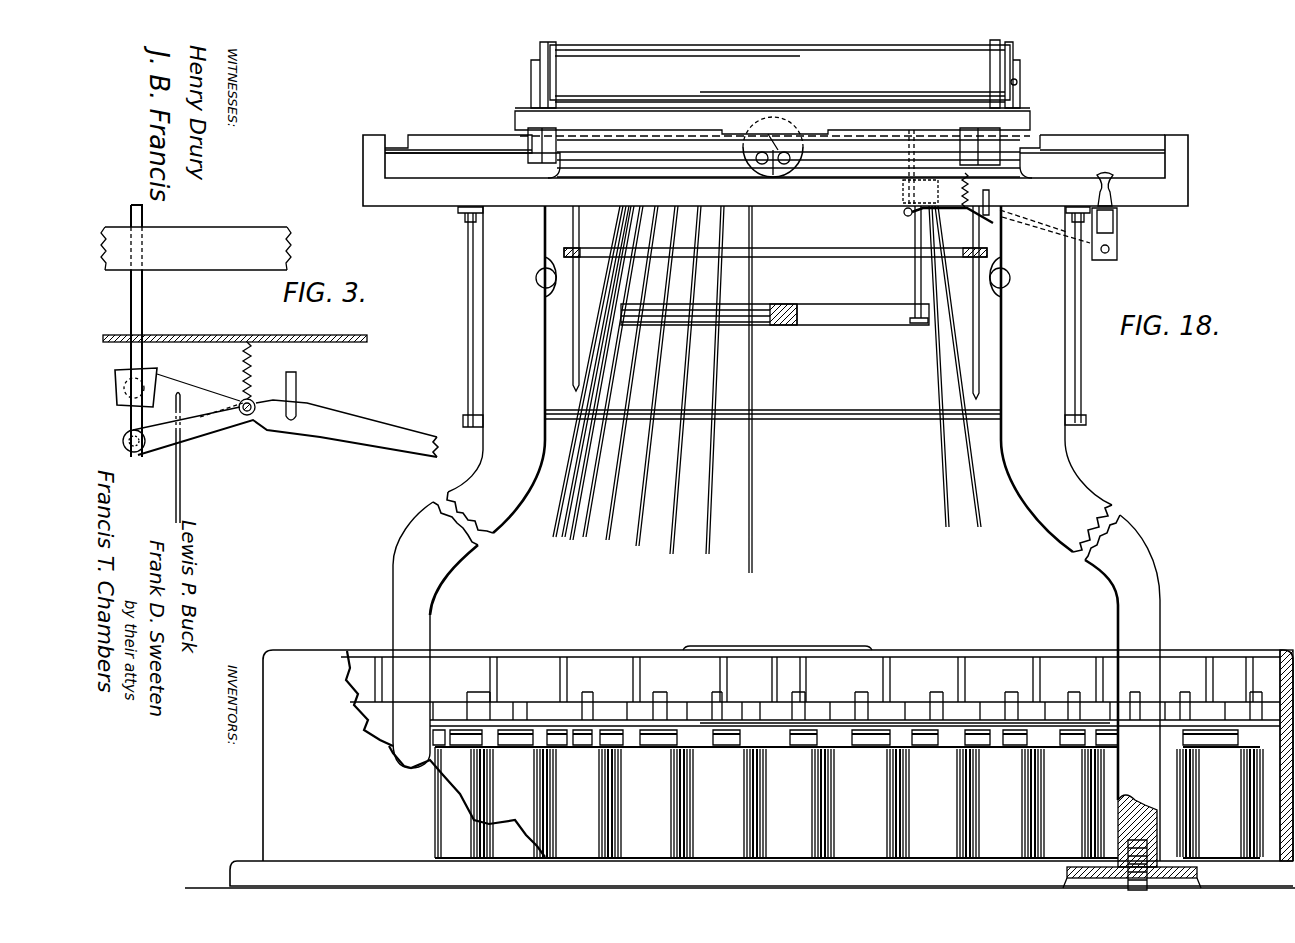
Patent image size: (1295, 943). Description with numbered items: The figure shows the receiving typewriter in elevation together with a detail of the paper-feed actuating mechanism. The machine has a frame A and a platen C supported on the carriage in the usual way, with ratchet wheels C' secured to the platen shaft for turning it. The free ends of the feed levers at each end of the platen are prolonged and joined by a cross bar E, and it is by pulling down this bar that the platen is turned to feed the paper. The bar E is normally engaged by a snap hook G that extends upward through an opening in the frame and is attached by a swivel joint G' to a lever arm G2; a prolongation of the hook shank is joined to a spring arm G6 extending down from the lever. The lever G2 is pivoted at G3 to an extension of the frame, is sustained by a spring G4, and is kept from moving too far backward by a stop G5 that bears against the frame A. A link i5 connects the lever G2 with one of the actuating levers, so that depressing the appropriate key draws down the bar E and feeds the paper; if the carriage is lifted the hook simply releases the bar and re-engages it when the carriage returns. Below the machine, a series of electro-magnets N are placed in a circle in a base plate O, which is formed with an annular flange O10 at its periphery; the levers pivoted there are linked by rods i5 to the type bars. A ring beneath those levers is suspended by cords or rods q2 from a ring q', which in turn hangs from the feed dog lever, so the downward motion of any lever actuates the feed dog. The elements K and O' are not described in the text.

In FIG. 3, the frame A is at (270, 331).
In FIG. 18, the frame A is at (655, 200).
In FIG. 18, the platen C is at (772, 111).
In FIG. 18, the ratchet wheels C' is at (780, 74).
In FIG. 3, the cross bar E is at (196, 248).
In FIG. 3, the snap hook G is at (155, 331).
In FIG. 18, the snap hook G is at (992, 168).
In FIG. 3, the swivel joint G' is at (158, 350).
In FIG. 18, the swivel joint G' is at (896, 206).
In FIG. 3, the lever arm G2 is at (280, 423).
In FIG. 18, the lever arm G2 is at (1117, 237).
In FIG. 18, the pivot G3 is at (1117, 255).
In FIG. 3, the spring G4 is at (250, 374).
In FIG. 18, the spring G4 is at (970, 182).
In FIG. 3, the stop G5 is at (296, 380).
In FIG. 18, the stop G5 is at (991, 202).
In FIG. 3, the spring arm G6 is at (196, 432).
In FIG. 18, the spring arm G6 is at (936, 214).
In FIG. 18, the key bar rack K is at (918, 281).
In FIG. 18, the electro-magnets N is at (597, 793).
In FIG. 18, the base plate O is at (740, 769).
In FIG. 18, the casing plate O' is at (467, 801).
In FIG. 18, the annular flange O10 is at (350, 650).
In FIG. 3, the link i5 is at (181, 486).
In FIG. 18, the link i5 is at (655, 453).
In FIG. 18, the ring q' is at (853, 270).
In FIG. 18, the cords or rods q2 is at (582, 290).